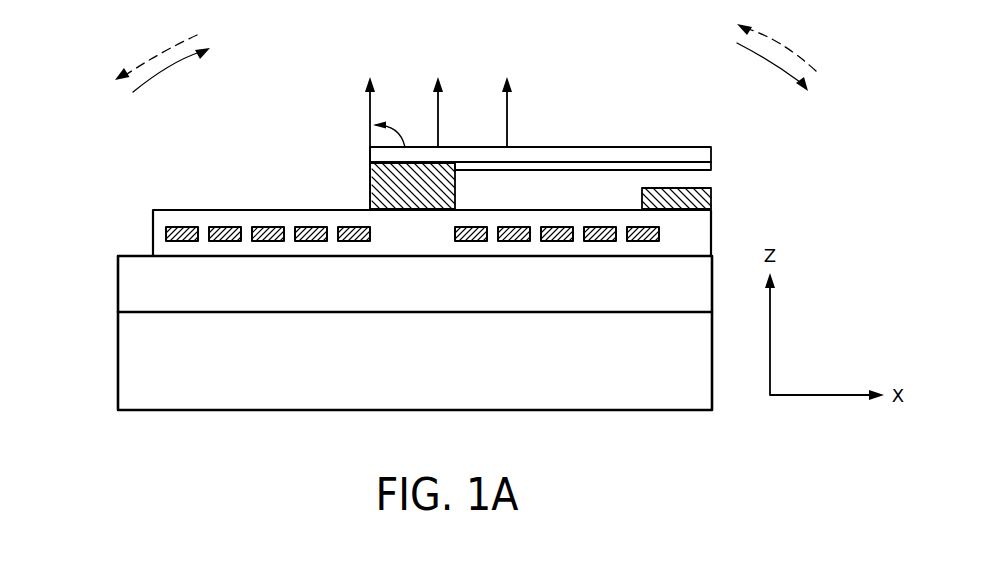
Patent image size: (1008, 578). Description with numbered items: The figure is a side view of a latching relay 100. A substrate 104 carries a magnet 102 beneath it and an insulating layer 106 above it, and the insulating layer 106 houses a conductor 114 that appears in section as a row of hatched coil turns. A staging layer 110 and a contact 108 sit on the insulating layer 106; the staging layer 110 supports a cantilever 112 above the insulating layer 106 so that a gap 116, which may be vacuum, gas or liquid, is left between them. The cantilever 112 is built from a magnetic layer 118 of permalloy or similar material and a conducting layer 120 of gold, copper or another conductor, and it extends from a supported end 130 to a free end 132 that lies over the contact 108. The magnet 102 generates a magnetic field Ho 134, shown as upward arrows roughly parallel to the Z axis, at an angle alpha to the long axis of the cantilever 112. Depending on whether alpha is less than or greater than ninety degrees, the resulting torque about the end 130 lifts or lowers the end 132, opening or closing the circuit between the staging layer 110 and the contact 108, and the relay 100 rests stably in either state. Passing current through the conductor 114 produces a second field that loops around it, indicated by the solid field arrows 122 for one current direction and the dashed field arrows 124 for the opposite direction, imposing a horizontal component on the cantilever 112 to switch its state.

The latching relay 100 is at (557, 72).
The magnet 102 is at (648, 369).
The substrate 104 is at (648, 295).
The insulating layer 106 is at (672, 240).
The contact 108 is at (712, 200).
The staging layer 110 is at (370, 190).
The cantilever 112 is at (683, 147).
The conductor 114 is at (264, 227).
The gap 116 is at (728, 181).
The magnetic layer 118 is at (502, 157).
The conducting layer 120 is at (472, 172).
The field arrows 122 is at (167, 67).
The dashed field arrows 124 is at (163, 40).
The end of cantilever 130 is at (370, 152).
The end of cantilever 132 is at (704, 156).
The magnetic field Ho 134 is at (373, 100).